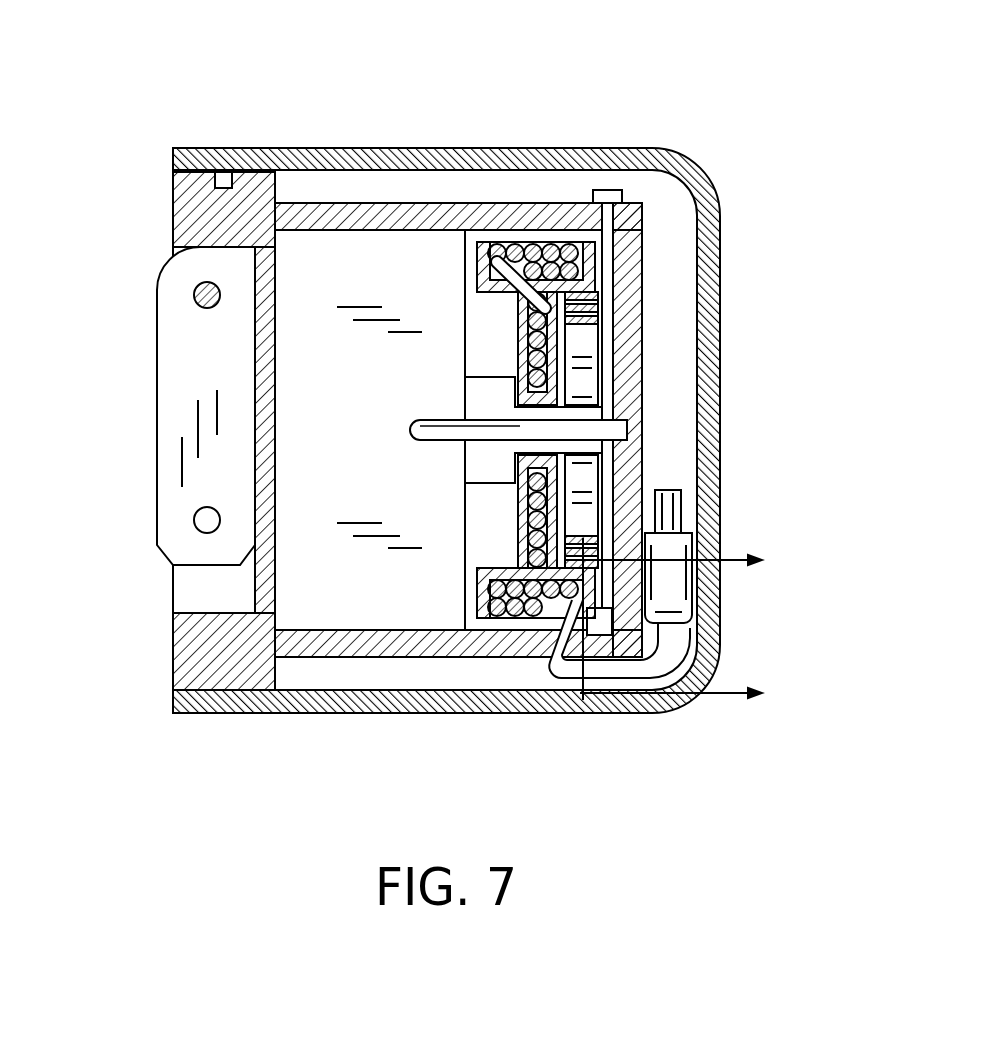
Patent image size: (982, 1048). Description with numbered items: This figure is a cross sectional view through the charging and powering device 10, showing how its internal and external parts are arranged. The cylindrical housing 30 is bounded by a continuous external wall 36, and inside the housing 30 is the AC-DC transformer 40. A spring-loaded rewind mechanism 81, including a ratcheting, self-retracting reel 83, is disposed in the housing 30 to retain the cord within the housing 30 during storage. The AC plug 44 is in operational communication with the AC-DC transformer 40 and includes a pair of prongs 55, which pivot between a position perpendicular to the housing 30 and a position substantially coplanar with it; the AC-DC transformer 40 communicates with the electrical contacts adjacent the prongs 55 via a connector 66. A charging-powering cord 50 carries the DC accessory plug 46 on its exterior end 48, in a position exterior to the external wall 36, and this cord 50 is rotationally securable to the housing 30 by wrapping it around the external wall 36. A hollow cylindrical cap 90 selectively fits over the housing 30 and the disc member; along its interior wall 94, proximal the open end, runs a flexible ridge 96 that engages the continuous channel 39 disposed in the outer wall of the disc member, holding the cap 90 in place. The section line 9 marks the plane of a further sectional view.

The motor assembly 10 is at (495, 92).
The outer housing shell 30 is at (690, 170).
The inner housing 90 is at (700, 188).
The top plate 36 is at (572, 203).
The notch 39 is at (175, 171).
The gap 94 is at (357, 175).
The housing top surface 96 is at (228, 150).
The mounting plate 44 is at (157, 282).
The plate surface 55 is at (170, 428).
The mass 40 is at (337, 262).
The shaft and laminations 81 is at (605, 355).
The coil winding 83 is at (478, 262).
The hub arm 66 is at (435, 442).
The cable sheath 50 is at (680, 643).
The cable 48 is at (673, 633).
The connector 46 is at (692, 600).
The section line 9- 9 is at (684, 623).